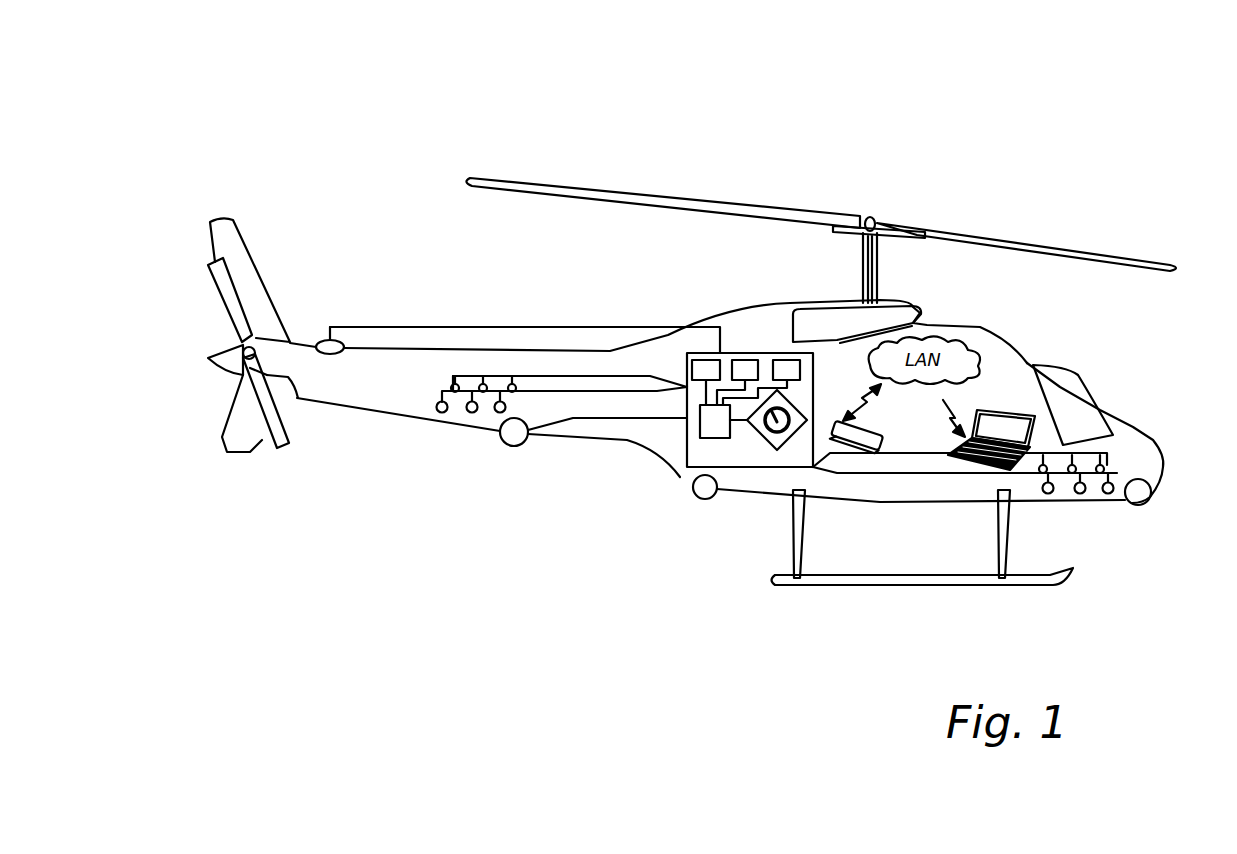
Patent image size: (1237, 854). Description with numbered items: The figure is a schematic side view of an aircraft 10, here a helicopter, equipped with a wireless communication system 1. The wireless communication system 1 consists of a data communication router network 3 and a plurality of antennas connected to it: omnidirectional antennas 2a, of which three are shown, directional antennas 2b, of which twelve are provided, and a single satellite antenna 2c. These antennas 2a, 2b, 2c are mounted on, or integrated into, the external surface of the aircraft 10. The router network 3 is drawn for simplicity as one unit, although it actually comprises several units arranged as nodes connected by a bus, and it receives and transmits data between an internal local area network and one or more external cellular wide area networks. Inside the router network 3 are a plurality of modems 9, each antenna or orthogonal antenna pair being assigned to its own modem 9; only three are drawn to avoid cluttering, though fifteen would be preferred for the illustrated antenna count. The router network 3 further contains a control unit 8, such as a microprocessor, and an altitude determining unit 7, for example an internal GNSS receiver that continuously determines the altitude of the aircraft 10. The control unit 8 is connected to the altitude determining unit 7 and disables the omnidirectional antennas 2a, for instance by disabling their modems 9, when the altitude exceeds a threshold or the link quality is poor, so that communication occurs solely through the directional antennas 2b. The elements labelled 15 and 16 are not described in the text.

The aircraft 10 is at (953, 156).
The wireless communication system 1 is at (653, 296).
The omnidirectional antenna 2a is at (514, 446).
The directional antenna 2b is at (472, 413).
The satellite antenna 2c is at (330, 340).
The data communication router network 3 is at (813, 467).
The altitude determining unit 7 is at (777, 450).
The control unit 8 is at (700, 435).
The modem 9 is at (713, 360).
The wireless link / mobile device 15 is at (903, 375).
The laptop computer 16 is at (1003, 410).